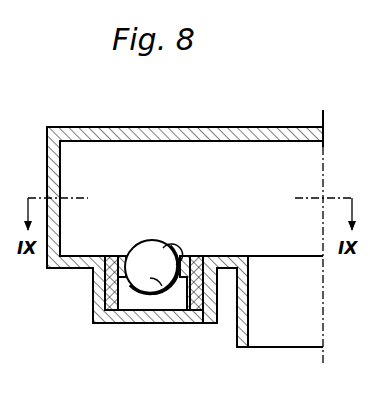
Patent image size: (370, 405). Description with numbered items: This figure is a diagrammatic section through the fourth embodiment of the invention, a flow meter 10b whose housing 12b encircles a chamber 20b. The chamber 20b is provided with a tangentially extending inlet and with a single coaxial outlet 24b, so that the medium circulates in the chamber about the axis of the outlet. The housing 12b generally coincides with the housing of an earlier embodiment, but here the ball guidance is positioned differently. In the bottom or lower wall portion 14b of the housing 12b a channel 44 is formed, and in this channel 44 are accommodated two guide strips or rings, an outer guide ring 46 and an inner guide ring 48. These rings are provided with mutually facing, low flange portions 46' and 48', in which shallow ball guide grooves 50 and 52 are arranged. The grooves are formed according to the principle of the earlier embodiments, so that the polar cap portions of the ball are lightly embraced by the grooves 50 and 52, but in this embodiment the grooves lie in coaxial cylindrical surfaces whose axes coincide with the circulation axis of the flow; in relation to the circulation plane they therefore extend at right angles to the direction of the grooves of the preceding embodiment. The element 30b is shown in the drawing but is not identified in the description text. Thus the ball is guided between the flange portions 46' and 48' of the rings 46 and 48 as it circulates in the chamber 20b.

The flow meter 10b is at (84, 124).
The housing 12b is at (236, 127).
The bottom or lower wall portion 14b is at (70, 270).
The chamber 20b is at (245, 186).
The coaxial outlet 24b is at (282, 328).
The channel member 30b is at (160, 323).
The channel 44 is at (154, 323).
The outer guide ring 46 is at (94, 306).
The low flange portion 46' is at (85, 287).
The inner guide ring 48 is at (201, 317).
The low flange portion 48' is at (230, 316).
The ball guide groove 50 is at (141, 250).
The ball guide groove 52 is at (168, 246).